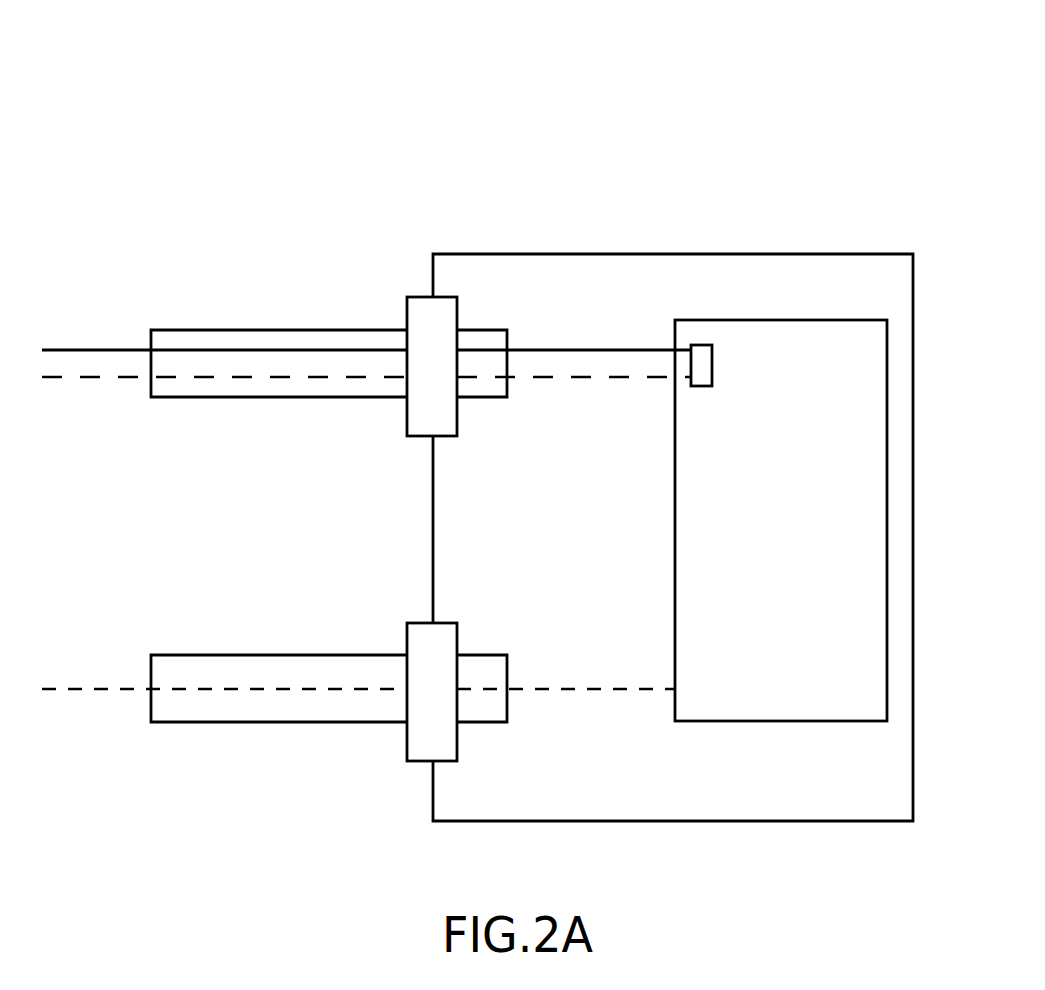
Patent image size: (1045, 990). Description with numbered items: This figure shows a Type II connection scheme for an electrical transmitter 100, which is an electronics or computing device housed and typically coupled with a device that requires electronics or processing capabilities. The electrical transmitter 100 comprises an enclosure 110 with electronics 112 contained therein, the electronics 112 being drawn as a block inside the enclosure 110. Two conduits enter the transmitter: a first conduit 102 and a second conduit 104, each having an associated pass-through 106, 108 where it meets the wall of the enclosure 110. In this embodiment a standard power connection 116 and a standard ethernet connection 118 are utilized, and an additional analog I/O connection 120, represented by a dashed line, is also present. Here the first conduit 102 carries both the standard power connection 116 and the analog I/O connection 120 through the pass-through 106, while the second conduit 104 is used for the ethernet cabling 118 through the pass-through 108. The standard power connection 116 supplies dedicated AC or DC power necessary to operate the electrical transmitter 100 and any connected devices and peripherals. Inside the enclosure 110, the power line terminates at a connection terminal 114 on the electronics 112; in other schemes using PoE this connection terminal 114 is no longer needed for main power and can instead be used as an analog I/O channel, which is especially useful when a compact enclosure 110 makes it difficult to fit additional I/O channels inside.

The electrical transmitter 100 is at (553, 100).
The first conduit 102 is at (296, 330).
The second conduit 104 is at (308, 655).
The pass-through 106 is at (414, 300).
The pass-through 108 is at (414, 626).
The enclosure 110 is at (855, 253).
The electronics 112 is at (788, 504).
The connection terminal 114 is at (713, 358).
The standard power connection 116 is at (52, 350).
The standard ethernet connection 118 is at (50, 689).
The analog I/O connection 120 is at (52, 378).